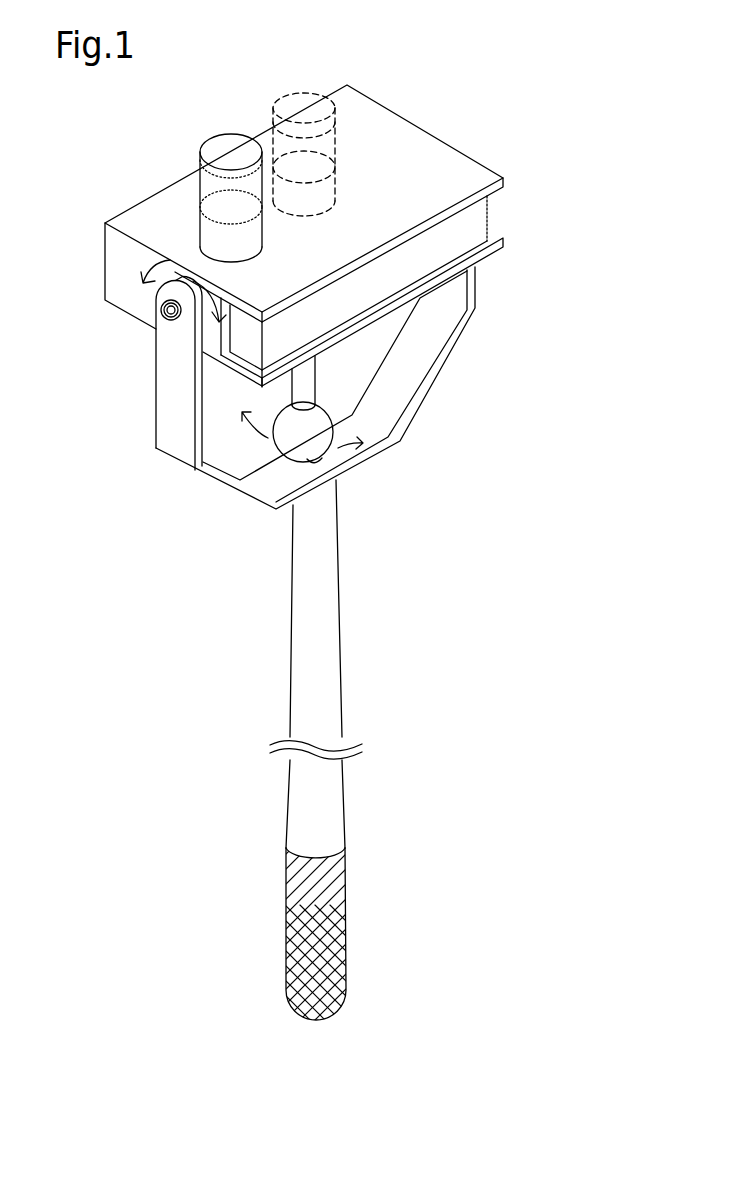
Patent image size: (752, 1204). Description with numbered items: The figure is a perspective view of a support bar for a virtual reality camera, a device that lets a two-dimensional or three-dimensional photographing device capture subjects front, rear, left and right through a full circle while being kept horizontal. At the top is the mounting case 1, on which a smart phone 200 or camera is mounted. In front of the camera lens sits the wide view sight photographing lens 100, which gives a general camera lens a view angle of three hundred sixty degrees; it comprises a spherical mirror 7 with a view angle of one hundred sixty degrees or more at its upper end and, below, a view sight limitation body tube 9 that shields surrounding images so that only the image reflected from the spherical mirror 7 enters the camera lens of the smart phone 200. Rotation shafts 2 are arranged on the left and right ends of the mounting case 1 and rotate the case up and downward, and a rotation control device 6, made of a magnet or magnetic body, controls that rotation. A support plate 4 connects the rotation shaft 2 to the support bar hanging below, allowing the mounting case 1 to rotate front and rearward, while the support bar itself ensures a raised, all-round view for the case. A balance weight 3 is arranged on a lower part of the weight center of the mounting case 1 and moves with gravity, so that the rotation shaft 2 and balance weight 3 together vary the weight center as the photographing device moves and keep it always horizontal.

The mounting case 1 is at (455, 167).
The wide view sight photographing lens 100 is at (215, 138).
The smart phone 200 is at (477, 217).
The spherical mirror 7 is at (220, 177).
The view sight limitation body tube 9 is at (190, 220).
The rotation control device 6 is at (160, 303).
The rotation shaft 2 is at (170, 313).
The support plate 4 is at (163, 403).
The balance weight 3 is at (293, 448).